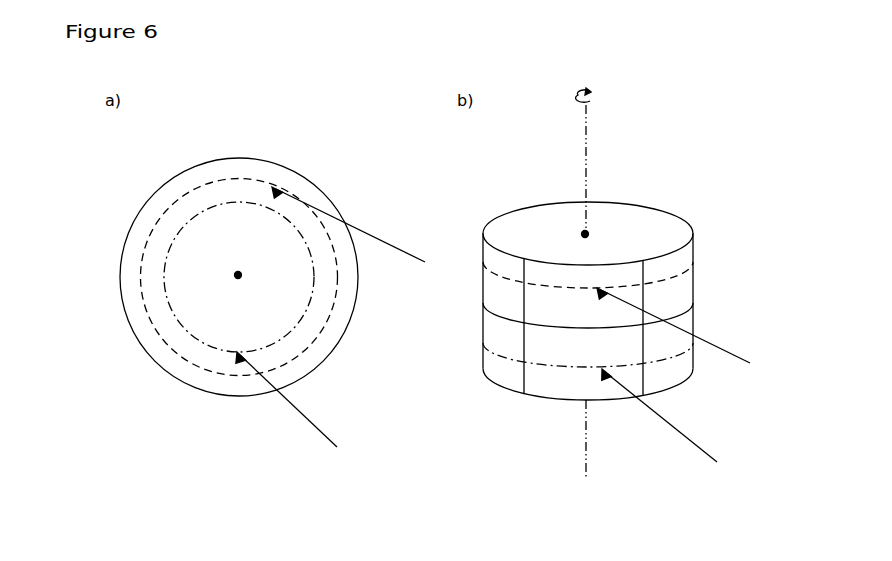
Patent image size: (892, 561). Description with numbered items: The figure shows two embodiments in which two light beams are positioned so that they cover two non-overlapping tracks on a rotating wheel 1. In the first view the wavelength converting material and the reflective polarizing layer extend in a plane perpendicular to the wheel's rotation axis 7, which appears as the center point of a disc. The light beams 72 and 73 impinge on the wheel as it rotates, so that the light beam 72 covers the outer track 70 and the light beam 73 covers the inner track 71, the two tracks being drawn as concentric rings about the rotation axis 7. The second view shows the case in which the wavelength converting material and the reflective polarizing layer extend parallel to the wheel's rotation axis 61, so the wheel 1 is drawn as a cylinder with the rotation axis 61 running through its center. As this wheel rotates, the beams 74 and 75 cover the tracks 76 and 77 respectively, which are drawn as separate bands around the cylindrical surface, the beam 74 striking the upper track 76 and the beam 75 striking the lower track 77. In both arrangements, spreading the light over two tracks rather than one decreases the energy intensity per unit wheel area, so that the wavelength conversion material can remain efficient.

In FIG. 6b, the wheel 1 is at (650, 217).
In FIG. 6a, the rotation axis 7 is at (238, 275).
In FIG. 6b, the rotation axis 61 is at (584, 136).
In FIG. 6a, the track 70 is at (170, 205).
In FIG. 6a, the track 71 is at (168, 258).
In FIG. 6a, the light beam 72 is at (358, 230).
In FIG. 6a, the light beam 73 is at (302, 411).
In FIG. 6b, the beam 74 is at (712, 345).
In FIG. 6b, the beam 75 is at (693, 442).
In FIG. 6b, the track 76 is at (655, 282).
In FIG. 6b, the track 77 is at (557, 368).